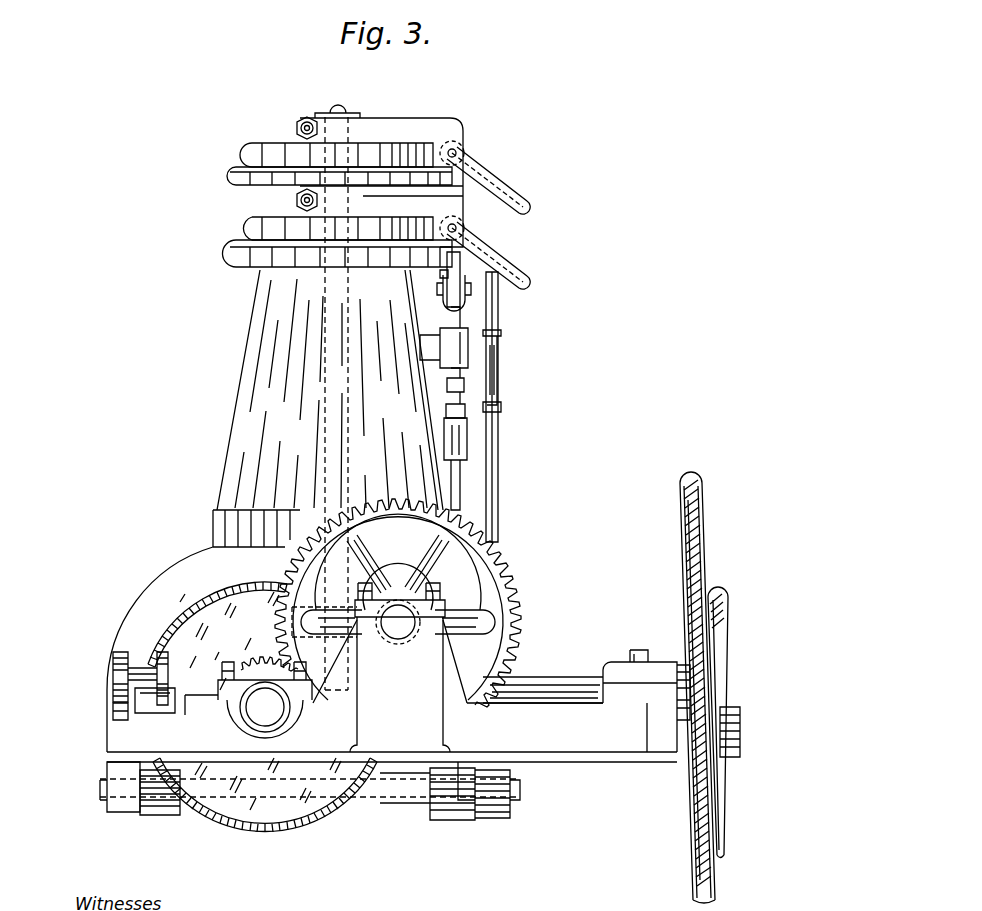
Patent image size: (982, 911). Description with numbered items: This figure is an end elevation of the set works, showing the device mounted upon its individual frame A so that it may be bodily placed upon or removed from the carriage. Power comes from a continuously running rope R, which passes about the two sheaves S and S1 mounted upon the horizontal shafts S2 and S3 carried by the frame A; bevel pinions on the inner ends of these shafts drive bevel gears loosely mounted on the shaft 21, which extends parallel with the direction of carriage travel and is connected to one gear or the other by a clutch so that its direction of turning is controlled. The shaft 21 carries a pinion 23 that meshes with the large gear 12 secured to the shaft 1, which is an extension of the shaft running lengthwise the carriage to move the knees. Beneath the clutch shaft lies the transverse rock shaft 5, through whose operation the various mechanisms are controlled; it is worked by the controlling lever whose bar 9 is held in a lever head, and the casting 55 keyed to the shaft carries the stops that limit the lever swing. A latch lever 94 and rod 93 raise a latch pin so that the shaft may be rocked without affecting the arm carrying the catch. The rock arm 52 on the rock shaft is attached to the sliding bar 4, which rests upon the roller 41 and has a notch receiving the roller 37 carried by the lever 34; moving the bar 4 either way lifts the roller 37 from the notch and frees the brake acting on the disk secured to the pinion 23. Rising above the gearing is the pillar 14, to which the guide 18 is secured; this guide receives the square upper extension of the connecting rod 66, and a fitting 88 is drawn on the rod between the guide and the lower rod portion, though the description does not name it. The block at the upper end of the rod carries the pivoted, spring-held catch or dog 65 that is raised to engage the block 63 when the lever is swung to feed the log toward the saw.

The pillar 14 is at (256, 382).
The block 63 is at (461, 257).
The catch or dog 65 is at (447, 275).
The guide 18 is at (466, 340).
The nut 88 is at (462, 384).
The connecting rod 66 is at (449, 480).
The lever bar 9 is at (498, 455).
The latch lever 94 is at (495, 356).
The rod 93 is at (492, 489).
The gear 12 is at (514, 598).
The shaft 1 is at (398, 633).
The pinion 23 is at (217, 636).
The shaft 21 is at (265, 697).
The roller 37 is at (118, 664).
The lever 34 is at (168, 663).
The bar 4 is at (129, 701).
The roller 41 is at (114, 715).
The rock arm 52 is at (150, 814).
The rock shaft 5 is at (358, 798).
The casting or block 55 is at (489, 819).
The horizontal shaft S2 is at (543, 677).
The frame A is at (607, 746).
The rope R is at (690, 482).
The sheave S is at (680, 535).
The sheave S1 is at (730, 628).
The horizontal shaft S3 is at (741, 724).